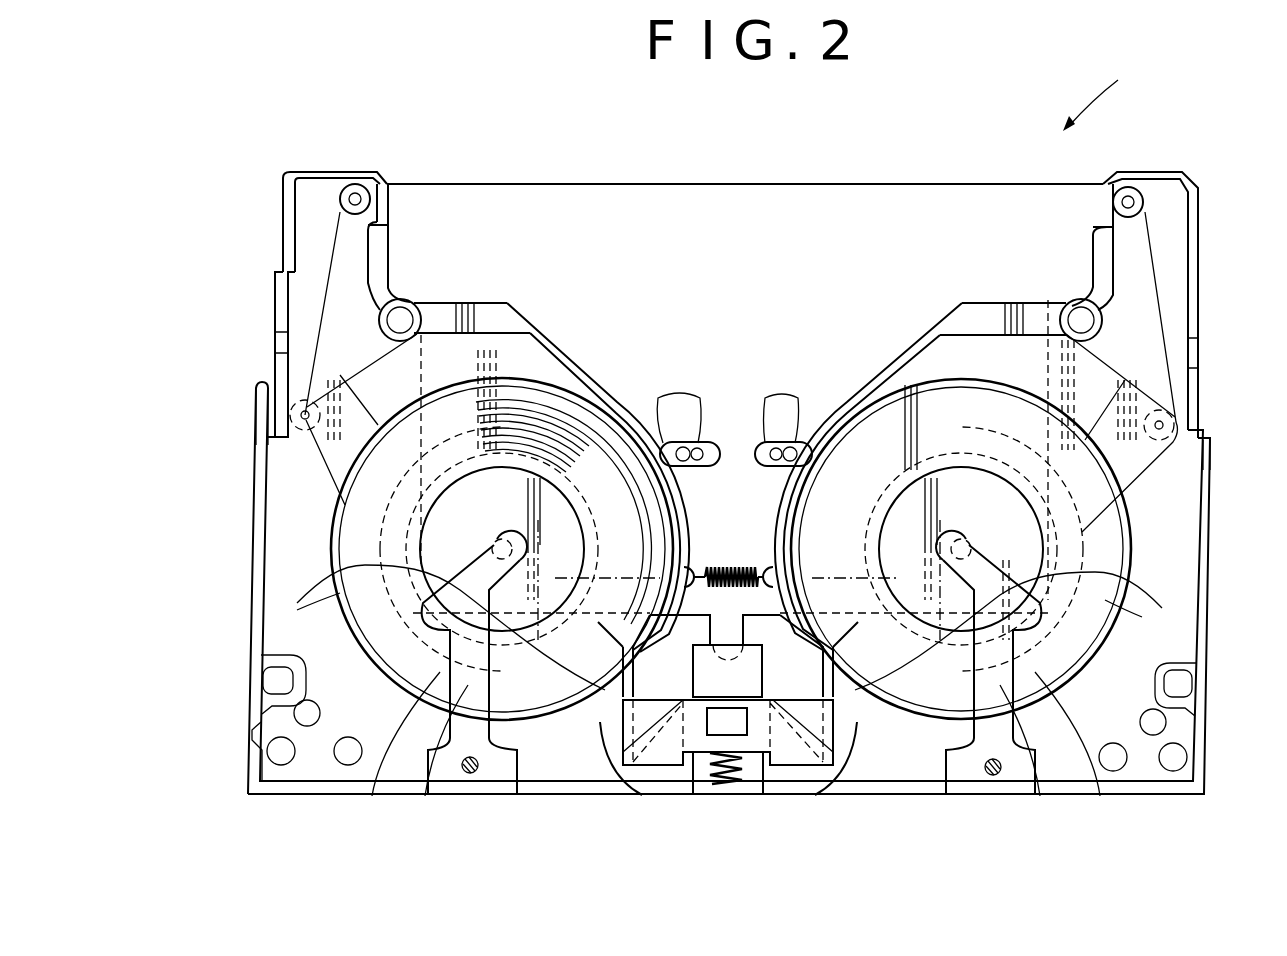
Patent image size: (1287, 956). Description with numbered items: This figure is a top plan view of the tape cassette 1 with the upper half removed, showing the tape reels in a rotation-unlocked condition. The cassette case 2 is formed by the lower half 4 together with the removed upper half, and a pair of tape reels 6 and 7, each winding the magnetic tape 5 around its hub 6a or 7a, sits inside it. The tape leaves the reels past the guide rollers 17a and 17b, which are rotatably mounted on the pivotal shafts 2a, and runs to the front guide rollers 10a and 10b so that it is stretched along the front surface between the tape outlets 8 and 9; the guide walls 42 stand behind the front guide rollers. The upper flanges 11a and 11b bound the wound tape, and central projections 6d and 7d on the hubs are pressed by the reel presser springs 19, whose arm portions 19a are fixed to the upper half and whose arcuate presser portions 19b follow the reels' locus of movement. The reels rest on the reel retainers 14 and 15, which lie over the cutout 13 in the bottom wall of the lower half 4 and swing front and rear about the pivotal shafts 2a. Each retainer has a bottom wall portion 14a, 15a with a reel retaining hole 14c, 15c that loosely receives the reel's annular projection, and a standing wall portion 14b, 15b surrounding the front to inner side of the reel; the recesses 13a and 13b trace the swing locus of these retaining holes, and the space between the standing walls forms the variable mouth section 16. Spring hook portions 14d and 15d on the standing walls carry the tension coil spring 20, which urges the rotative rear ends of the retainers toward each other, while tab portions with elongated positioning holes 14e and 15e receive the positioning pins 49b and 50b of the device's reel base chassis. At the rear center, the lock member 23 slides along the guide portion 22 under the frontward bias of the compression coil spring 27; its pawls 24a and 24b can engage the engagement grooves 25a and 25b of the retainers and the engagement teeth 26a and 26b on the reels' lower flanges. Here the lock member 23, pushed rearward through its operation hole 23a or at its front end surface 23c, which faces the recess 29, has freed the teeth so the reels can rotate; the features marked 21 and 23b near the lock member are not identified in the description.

The tape cassette 1 is at (1145, 87).
The cassette case 2 is at (1173, 798).
The pivotal shafts 2a is at (300, 408).
The lower half 4 is at (298, 793).
The magnetic tape 5 is at (575, 183).
The tape reel 6 is at (330, 538).
The hub 6a is at (500, 478).
The central projection 6d is at (492, 540).
The tape reel 7 is at (1137, 537).
The hub 7a is at (983, 490).
The central projection 7d is at (973, 542).
The tape outlet 8 is at (310, 196).
The tape outlet 9 is at (1172, 196).
The guide roller 10a is at (355, 183).
The guide roller 10b is at (1126, 186).
The upper flange 11a is at (301, 614).
The upper flange 11b is at (1140, 620).
The cutout 13 is at (1044, 320).
The recess 13a is at (372, 790).
The recess 13b is at (1098, 785).
The reel retainer 14 is at (580, 368).
The bottom wall portion 14a is at (447, 350).
The standing wall portion 14b is at (548, 333).
The reel retaining hole 14c is at (632, 408).
The spring hook portion 14d is at (684, 577).
The positioning hole 14e is at (700, 440).
The reel retainer 15 is at (888, 368).
The bottom wall portion 15a is at (968, 350).
The standing wall portion 15b is at (930, 333).
The reel retaining hole 15c is at (884, 393).
The spring hook portion 15d is at (773, 577).
The positioning hole 15e is at (775, 440).
The mouth section 16 is at (737, 298).
The guide roller 17a is at (288, 447).
The guide roller 17b is at (1197, 452).
The reel presser spring 19 is at (395, 668).
The arm portion 19a is at (426, 790).
The presser portion 19b is at (357, 575).
The tension coil spring 20 is at (740, 567).
The lock release button 21 is at (710, 805).
The guide portion 22 is at (698, 780).
The lock member 23 is at (660, 748).
The operation hole 23a is at (754, 755).
The slider side 23b is at (787, 750).
The front end surface 23c is at (720, 643).
The pawl 24a is at (612, 760).
The pawl 24b is at (838, 745).
The engagement groove 25a is at (618, 640).
The engagement groove 25b is at (835, 668).
The engagement teeth 26a is at (598, 758).
The engagement teeth 26b is at (862, 750).
The compression coil spring 27 is at (745, 737).
The recess 29 is at (745, 625).
The guide walls 42 is at (388, 243).
The positioning pin 49b is at (683, 440).
The positioning pin 50b is at (785, 440).